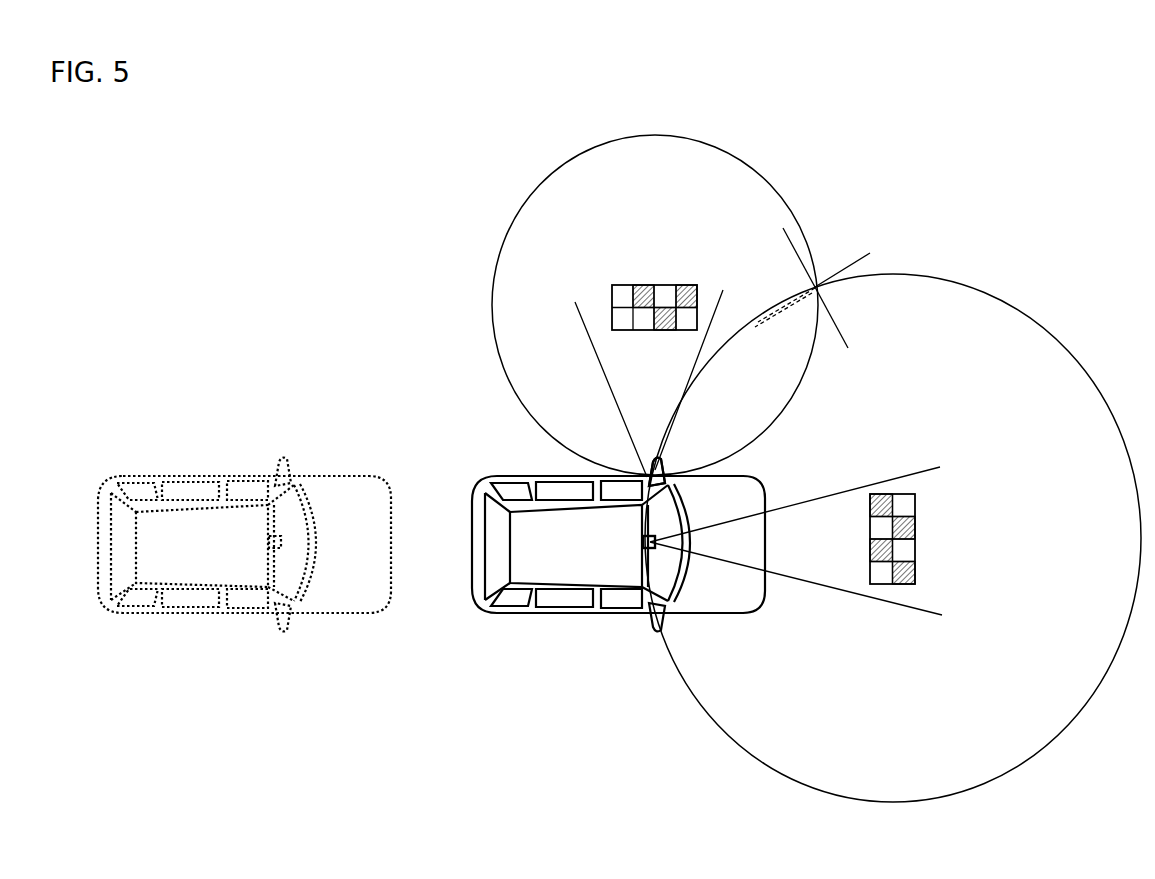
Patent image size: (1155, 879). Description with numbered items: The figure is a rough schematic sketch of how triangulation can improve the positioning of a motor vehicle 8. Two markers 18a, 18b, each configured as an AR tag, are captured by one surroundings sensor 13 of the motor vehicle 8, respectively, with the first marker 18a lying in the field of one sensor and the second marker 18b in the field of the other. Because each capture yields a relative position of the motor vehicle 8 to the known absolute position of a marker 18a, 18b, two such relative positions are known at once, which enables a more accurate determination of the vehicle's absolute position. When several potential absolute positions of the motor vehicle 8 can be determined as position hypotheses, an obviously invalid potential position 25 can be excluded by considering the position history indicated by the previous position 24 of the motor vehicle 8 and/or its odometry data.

The motor vehicle 8 is at (537, 553).
The surroundings sensor 13 is at (613, 474).
The marker 18a is at (664, 285).
The marker 18b is at (957, 520).
The previous position 24 is at (234, 476).
The invalid potential position 25 is at (815, 287).